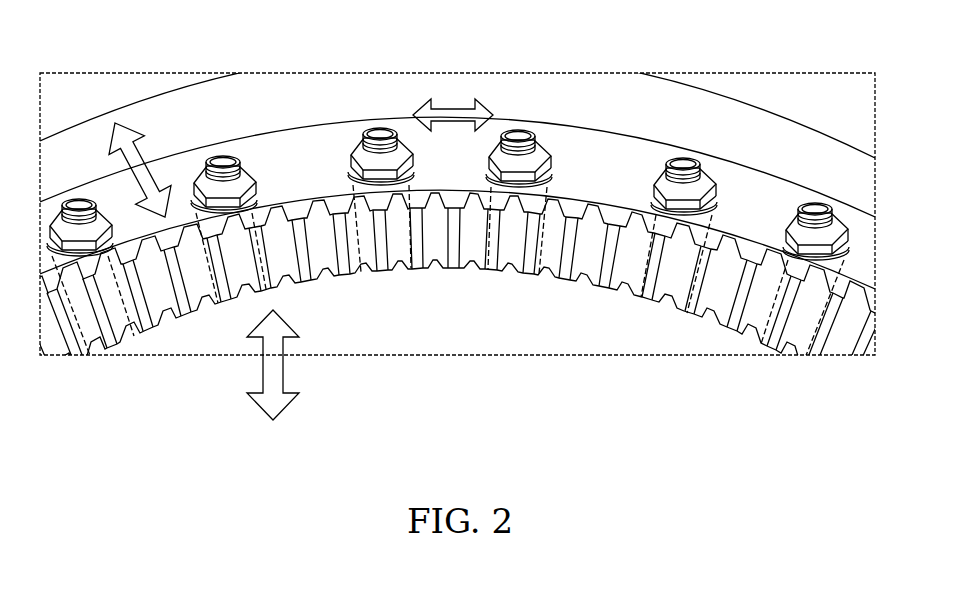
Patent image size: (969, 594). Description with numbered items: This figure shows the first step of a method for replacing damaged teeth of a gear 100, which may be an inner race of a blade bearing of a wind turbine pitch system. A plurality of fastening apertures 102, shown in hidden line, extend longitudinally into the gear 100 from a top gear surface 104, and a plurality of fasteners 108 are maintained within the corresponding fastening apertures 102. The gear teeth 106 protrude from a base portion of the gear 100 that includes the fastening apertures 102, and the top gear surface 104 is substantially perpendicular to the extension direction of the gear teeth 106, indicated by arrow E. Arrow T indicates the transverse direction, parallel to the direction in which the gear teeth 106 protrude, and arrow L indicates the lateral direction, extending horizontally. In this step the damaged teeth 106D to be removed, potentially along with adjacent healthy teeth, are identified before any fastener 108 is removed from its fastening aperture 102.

The gear 100 is at (786, 64).
The fastening apertures 102 is at (258, 198).
The top gear surface 104 is at (600, 160).
The gear teeth 106 is at (728, 328).
The damaged gear teeth 106D is at (418, 268).
The fasteners 108 is at (222, 159).